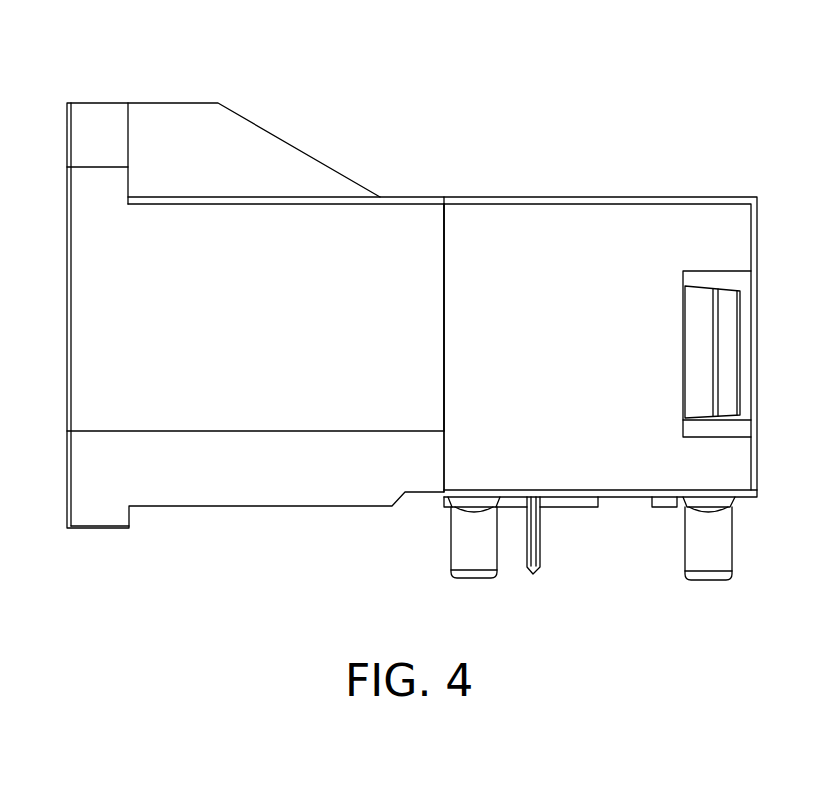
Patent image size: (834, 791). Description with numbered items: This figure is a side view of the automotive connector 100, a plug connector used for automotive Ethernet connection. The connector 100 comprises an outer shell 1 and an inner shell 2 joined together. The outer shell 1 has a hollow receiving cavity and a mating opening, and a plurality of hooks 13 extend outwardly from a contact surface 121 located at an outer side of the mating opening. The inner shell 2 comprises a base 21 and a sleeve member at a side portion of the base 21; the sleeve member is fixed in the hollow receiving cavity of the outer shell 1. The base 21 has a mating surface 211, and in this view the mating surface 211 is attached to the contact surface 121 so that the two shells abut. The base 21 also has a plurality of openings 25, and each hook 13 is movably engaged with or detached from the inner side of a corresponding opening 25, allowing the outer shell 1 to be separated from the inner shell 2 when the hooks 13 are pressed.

The automotive connector 100 is at (460, 64).
The outer shell 1 is at (253, 388).
The inner shell 2 is at (630, 197).
The contact surface 121 is at (443, 226).
The mating surface 211 is at (445, 240).
The hook 13 is at (727, 348).
The base 21 is at (588, 403).
The opening 25 is at (717, 436).